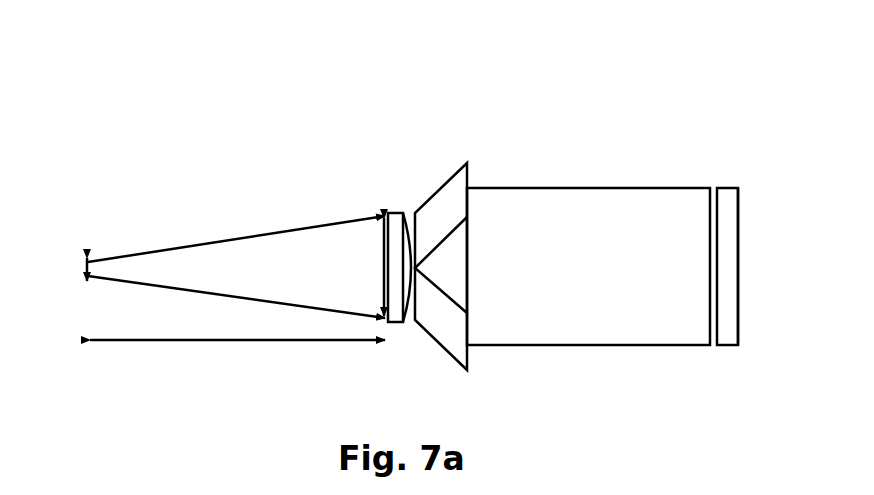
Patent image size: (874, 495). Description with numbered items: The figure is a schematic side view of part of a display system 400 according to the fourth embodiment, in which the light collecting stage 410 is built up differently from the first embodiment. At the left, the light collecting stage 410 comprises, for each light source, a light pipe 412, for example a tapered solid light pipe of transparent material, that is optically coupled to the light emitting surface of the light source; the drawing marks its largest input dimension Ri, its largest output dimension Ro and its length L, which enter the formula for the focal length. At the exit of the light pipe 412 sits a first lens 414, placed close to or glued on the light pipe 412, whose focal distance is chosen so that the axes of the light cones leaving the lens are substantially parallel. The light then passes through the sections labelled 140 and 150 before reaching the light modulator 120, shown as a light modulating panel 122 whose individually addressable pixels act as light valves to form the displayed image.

The display system 400 is at (96, 72).
The light collecting stage 410 is at (413, 152).
The light pipe 412 is at (210, 283).
The first lens 414 is at (395, 298).
The light concentrator 140 is at (468, 152).
The light guide body 150 is at (713, 152).
The light modulator 120 is at (750, 152).
The light modulating panel 122 is at (730, 335).